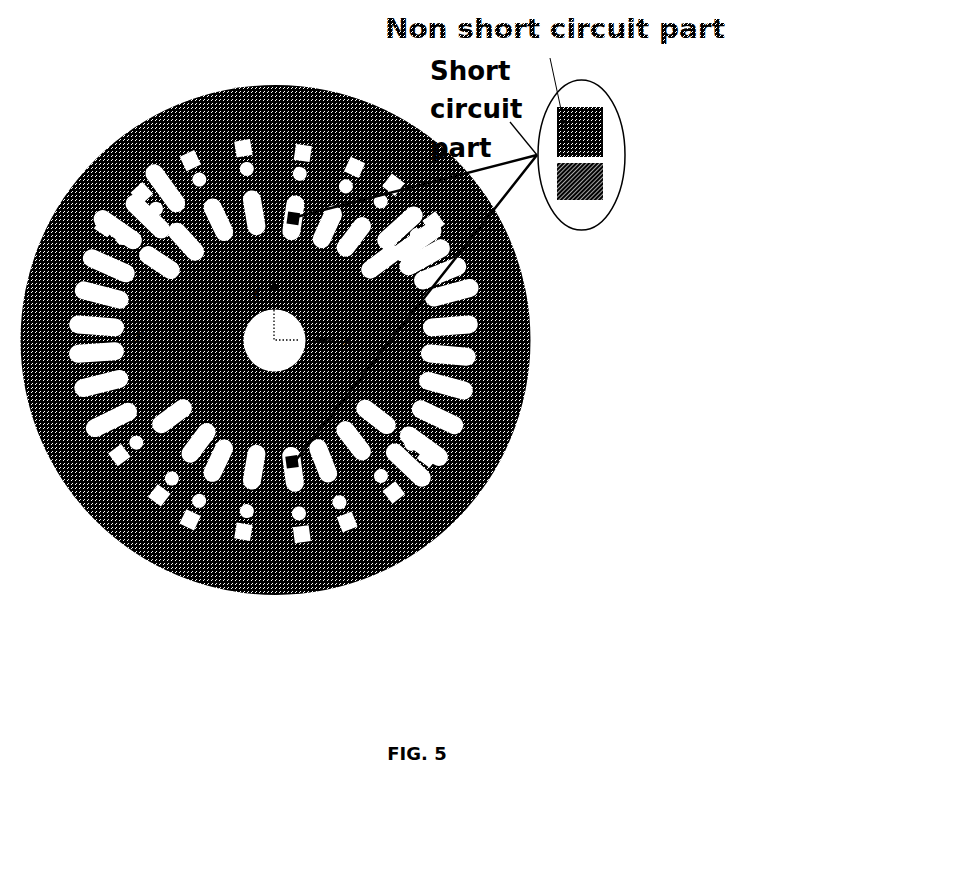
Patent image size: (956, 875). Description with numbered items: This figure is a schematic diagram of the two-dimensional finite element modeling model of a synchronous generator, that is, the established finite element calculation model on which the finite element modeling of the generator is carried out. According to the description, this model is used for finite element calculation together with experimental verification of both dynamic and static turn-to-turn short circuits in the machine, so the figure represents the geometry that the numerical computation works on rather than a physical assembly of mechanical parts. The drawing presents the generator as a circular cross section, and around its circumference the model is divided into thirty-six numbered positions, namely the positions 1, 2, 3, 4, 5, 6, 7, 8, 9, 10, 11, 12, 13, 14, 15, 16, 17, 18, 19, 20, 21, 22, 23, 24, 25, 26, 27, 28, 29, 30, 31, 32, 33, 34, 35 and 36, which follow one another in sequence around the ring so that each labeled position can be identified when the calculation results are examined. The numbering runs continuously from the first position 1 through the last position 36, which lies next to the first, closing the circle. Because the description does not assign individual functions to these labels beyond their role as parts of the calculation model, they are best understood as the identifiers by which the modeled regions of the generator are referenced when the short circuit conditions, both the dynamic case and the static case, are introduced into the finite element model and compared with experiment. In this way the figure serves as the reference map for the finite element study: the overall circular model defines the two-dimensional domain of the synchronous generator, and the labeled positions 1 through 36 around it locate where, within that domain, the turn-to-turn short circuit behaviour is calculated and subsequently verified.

The slot 1 is at (458, 324).
The slot 2 is at (456, 291).
The slot 3 is at (443, 265).
The slot 4 is at (426, 243).
The slot 5 is at (416, 221).
The slot 6 is at (402, 218).
The slot 7 is at (394, 194).
The slot 8 is at (366, 191).
The slot 9 is at (328, 183).
The slot 10 is at (279, 178).
The slot 11 is at (238, 179).
The slot 12 is at (205, 189).
The slot 13 is at (165, 185).
The slot 14 is at (160, 221).
The slot 15 is at (131, 216).
The slot 16 is at (107, 232).
The slot 17 is at (120, 254).
The slot 18 is at (93, 288).
The slot 19 is at (90, 324).
The slot 20 is at (91, 360).
The slot 21 is at (96, 391).
The slot 22 is at (101, 420).
The slot 23 is at (111, 451).
The slot 24 is at (152, 461).
The slot 25 is at (183, 482).
The slot 26 is at (207, 497).
The slot 27 is at (250, 504).
The slot 28 is at (296, 505).
The slot 29 is at (333, 497).
The slot 30 is at (369, 481).
The slot 31 is at (408, 483).
The slot 32 is at (396, 449).
The slot 33 is at (429, 448).
The slot 34 is at (445, 419).
The slot 35 is at (455, 388).
The slot 36 is at (460, 356).